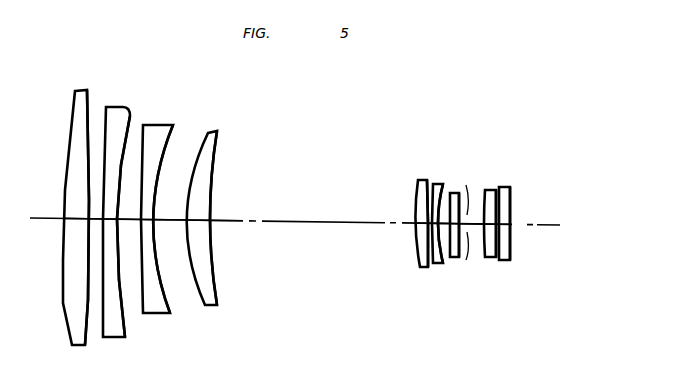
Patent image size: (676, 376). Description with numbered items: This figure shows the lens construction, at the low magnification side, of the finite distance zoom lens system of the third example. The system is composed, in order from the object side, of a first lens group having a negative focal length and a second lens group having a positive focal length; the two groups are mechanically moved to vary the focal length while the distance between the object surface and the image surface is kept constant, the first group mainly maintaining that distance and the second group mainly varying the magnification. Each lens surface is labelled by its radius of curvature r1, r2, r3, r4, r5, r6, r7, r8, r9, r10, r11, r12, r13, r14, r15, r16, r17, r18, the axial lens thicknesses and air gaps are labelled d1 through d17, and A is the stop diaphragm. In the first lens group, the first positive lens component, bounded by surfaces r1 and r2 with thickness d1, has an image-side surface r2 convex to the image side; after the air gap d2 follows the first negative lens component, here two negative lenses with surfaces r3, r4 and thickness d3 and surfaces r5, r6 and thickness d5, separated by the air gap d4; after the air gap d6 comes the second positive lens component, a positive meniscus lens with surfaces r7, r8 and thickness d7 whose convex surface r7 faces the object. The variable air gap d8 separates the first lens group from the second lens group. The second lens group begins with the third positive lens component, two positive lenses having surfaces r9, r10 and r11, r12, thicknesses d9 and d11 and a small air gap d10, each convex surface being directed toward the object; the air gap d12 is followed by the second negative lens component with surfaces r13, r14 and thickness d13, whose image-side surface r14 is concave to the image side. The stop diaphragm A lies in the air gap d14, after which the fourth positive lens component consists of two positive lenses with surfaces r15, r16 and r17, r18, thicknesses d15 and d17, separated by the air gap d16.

The radius of curvature of first lens surface r1 is at (64, 80).
The radius of curvature of second lens surface r2 is at (87, 90).
The radius of curvature of third lens surface r3 is at (108, 107).
The radius of curvature of fourth lens surface r4 is at (130, 108).
The radius of curvature of fifth lens surface r5 is at (145, 125).
The radius of curvature of sixth lens surface r6 is at (173, 127).
The radius of curvature of seventh lens surface r7 is at (208, 133).
The radius of curvature of eighth lens surface r8 is at (217, 131).
The radius of curvature of ninth lens surface r9 is at (418, 179).
The radius of curvature of tenth lens surface r10 is at (427, 179).
The radius of curvature of eleventh lens surface r11 is at (434, 183).
The radius of curvature of twelfth lens surface r12 is at (442, 183).
The radius of curvature of thirteenth lens surface r13 is at (450, 192).
The radius of curvature of fourteenth lens surface r14 is at (459, 192).
The radius of curvature of fifteenth lens surface r15 is at (485, 190).
The radius of curvature of sixteenth lens surface r16 is at (496, 190).
The radius of curvature of seventeenth lens surface r17 is at (500, 187).
The radius of curvature of eighteenth lens surface r18 is at (510, 187).
The stop diaphragm A is at (467, 190).
The lens thickness of first positive lens component d1 is at (65, 301).
The air gap between first positive and first negative lens components d2 is at (98, 285).
The lens thickness of first negative lens d3 is at (114, 290).
The air gap between the two negative lenses d4 is at (128, 288).
The lens thickness of second negative lens d5 is at (163, 295).
The air gap between first negative and second positive lens components d6 is at (186, 262).
The lens thickness of positive meniscus lens d7 is at (214, 255).
The variable air gap between first and second lens groups d8 is at (306, 222).
The lens thickness of first lens of third positive lens component d9 is at (417, 262).
The air gap within third positive lens component d10 is at (430, 260).
The lens thickness of second lens of third positive lens component d11 is at (437, 258).
The air gap between third positive and second negative lens components d12 is at (446, 260).
The lens thickness of second negative lens component d13 is at (455, 258).
The air gap between second negative and fourth positive lens components d14 is at (472, 258).
The lens thickness of first lens of fourth positive lens component d15 is at (491, 258).
The air gap within fourth positive lens component d16 is at (498, 262).
The lens thickness of last lens d17 is at (512, 260).